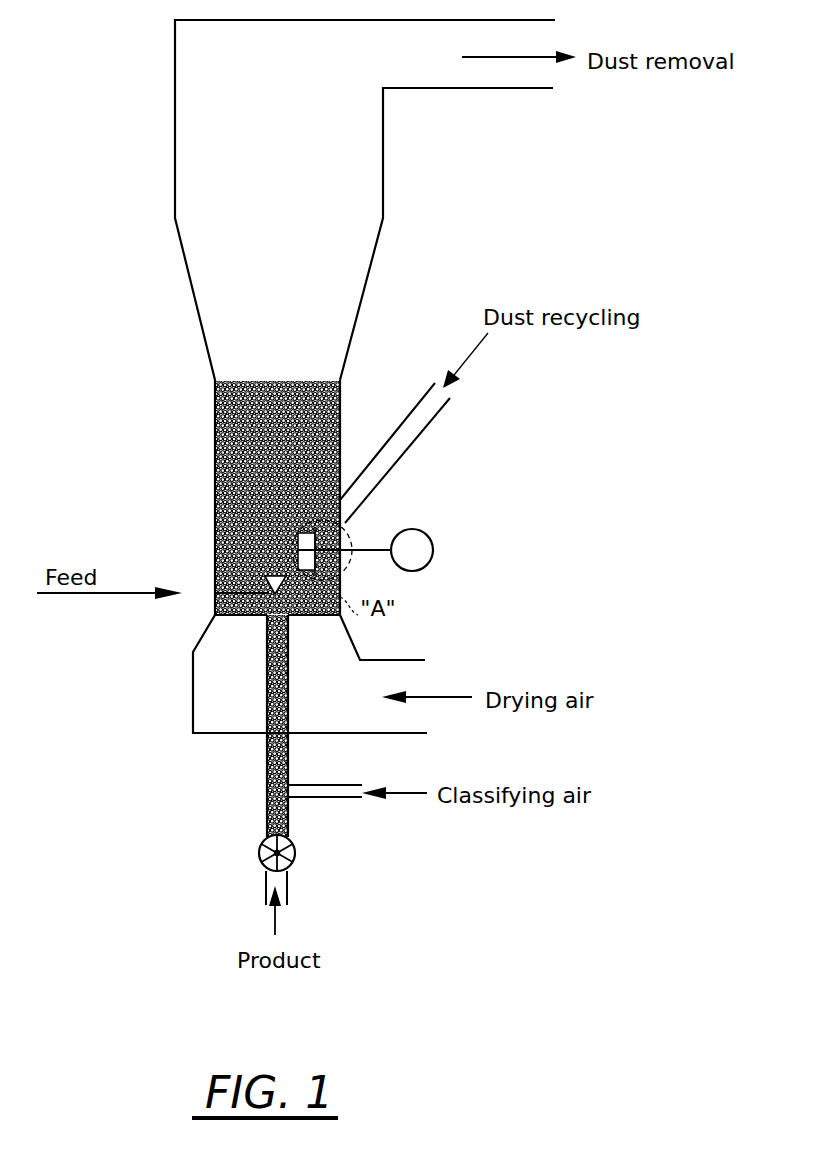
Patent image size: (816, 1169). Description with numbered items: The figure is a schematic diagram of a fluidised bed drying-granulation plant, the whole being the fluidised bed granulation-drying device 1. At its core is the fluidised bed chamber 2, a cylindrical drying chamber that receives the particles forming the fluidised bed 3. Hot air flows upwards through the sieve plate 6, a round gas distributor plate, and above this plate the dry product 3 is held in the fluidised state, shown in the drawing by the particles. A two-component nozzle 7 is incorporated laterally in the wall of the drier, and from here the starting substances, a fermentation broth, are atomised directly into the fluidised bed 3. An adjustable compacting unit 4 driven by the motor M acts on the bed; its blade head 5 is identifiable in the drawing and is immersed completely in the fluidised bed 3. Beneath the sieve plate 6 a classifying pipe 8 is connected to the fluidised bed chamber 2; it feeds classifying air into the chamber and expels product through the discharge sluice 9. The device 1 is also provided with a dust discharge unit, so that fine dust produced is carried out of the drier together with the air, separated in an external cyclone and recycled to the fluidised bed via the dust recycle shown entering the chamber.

The fluidised bed granulation-drying device 1 is at (353, 158).
The fluidised bed chamber 2 is at (215, 465).
The fluidised bed 3 is at (215, 428).
The compacting unit 4 is at (366, 550).
The blade head 5 is at (343, 568).
The sieve plate 6 is at (315, 617).
The two-component nozzle 7 is at (215, 560).
The classifying pipe 8 is at (266, 696).
The discharge sluice 9 is at (259, 853).